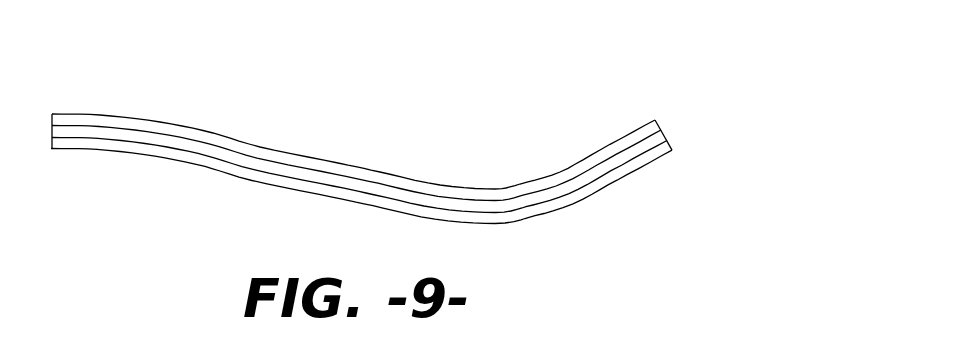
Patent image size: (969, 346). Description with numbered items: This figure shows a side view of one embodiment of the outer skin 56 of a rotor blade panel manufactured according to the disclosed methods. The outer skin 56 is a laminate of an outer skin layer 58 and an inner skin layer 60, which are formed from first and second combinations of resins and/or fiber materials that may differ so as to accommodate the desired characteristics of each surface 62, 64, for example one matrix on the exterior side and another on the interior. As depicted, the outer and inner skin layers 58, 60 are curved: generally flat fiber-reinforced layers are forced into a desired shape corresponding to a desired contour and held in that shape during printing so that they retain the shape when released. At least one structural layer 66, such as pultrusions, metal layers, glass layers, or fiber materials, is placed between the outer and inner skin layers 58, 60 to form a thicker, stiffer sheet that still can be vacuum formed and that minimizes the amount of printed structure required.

The outer skin 56 is at (566, 89).
The outer skin layer 58 is at (582, 211).
The inner skin layer 60 is at (341, 154).
The surface 62 is at (262, 186).
The surface 64 is at (213, 133).
The structural layer 66 is at (152, 141).